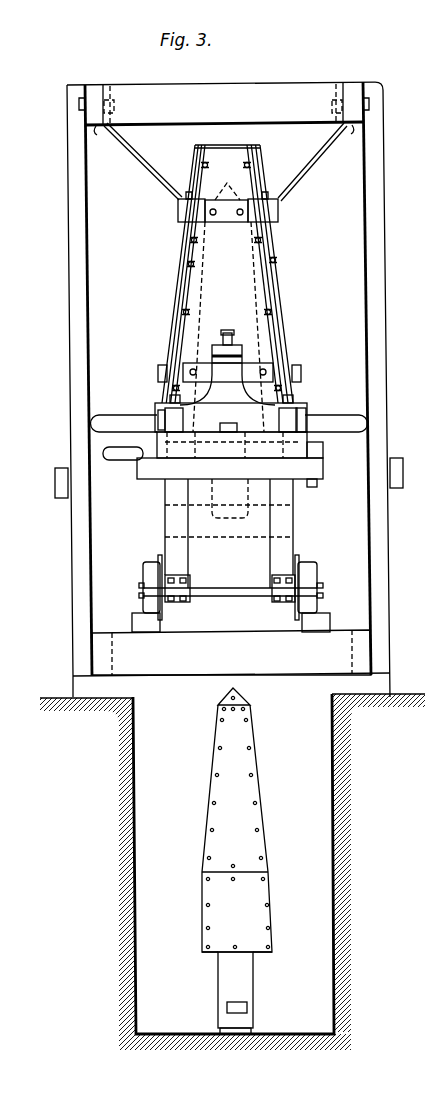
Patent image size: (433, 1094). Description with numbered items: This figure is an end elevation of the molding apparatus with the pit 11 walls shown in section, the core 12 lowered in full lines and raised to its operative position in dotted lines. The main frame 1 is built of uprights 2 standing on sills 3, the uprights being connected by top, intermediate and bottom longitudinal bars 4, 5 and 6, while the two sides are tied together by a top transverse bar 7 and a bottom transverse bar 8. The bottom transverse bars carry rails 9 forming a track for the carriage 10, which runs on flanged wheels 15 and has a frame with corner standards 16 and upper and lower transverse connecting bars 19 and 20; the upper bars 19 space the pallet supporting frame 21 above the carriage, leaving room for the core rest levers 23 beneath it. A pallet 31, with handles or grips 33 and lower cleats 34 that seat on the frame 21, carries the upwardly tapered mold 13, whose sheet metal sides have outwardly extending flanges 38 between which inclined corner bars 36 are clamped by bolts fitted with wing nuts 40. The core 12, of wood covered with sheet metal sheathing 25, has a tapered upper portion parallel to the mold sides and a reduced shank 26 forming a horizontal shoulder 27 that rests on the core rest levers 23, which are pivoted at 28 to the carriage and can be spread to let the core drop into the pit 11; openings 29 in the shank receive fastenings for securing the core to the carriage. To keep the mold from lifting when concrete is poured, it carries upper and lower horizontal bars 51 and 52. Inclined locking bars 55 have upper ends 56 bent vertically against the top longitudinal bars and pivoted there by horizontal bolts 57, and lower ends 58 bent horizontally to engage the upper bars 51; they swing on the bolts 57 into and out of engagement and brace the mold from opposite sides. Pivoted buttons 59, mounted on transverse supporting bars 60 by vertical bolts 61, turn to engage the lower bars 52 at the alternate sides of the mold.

The main frame 1 is at (343, 81).
The uprights 2 is at (70, 318).
The sills 3 is at (88, 688).
The top longitudinal bars 4 is at (223, 138).
The intermediate longitudinal bars 5 is at (55, 498).
The bottom longitudinal bars 6 is at (118, 653).
The top transverse bar 7 is at (224, 103).
The bottom transverse bar 8 is at (231, 652).
The rails 9 is at (132, 622).
The carriage 10 is at (295, 528).
The pit 11 is at (233, 864).
The core 12 is at (206, 262).
The mold 13 is at (279, 278).
The wheels 15 is at (146, 576).
The corner standards 16 is at (276, 556).
The upper transverse connecting bars 19 is at (230, 468).
The lower transverse connecting bars 20 is at (229, 522).
The pallet supporting frame 21 is at (239, 430).
The core rest levers 23 is at (134, 461).
The sheathing 25 is at (212, 891).
The shank 26 is at (203, 1000).
The horizontal shoulder 27 is at (208, 955).
The pivot 28 is at (313, 487).
The openings 29 is at (240, 1014).
The pallet 31 is at (302, 417).
The handles or grips 33 is at (107, 422).
The cleats 34 is at (160, 423).
The corner bars 36 is at (182, 280).
The flanges 38 is at (187, 266).
The wing nuts 40 is at (245, 167).
The upper horizontal bars 51 is at (178, 215).
The lower horizontal bars 52 is at (266, 369).
The locking bars 55 is at (157, 170).
The upper ends 56 is at (117, 88).
The bolts 57 is at (116, 106).
The lower ends 58 is at (188, 197).
The pivoted buttons 59 is at (240, 351).
The transverse supporting bars 60 is at (198, 404).
The vertical bolts 61 is at (290, 397).